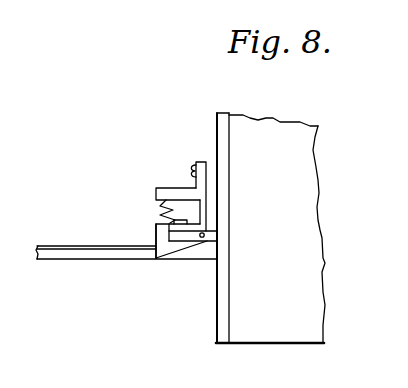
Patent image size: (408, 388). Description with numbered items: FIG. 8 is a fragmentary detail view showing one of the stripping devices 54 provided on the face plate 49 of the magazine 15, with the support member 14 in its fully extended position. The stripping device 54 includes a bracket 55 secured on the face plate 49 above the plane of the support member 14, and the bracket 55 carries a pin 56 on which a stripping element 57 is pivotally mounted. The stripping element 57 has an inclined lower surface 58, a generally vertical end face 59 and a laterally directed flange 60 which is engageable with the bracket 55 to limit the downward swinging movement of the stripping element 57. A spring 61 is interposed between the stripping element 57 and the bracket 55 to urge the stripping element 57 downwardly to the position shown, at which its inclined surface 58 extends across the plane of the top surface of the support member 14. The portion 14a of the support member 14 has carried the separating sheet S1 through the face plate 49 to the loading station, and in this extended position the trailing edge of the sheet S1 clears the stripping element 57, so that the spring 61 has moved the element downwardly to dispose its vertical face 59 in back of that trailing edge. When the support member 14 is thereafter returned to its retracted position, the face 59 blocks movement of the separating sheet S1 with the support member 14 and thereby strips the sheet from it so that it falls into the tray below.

The support member 14 is at (187, 270).
The portion of support member 14a is at (76, 292).
The magazine 15 is at (275, 213).
The face plate 49 is at (220, 119).
The stripping device 54 is at (195, 157).
The bracket 55 is at (184, 191).
The pin 56 is at (206, 236).
The stripping element 57 is at (156, 230).
The inclined lower surface 58 is at (168, 259).
The vertical end face 59 is at (156, 237).
The laterally directed flange 60 is at (183, 222).
The spring 61 is at (165, 203).
The separating sheet S1 is at (70, 246).